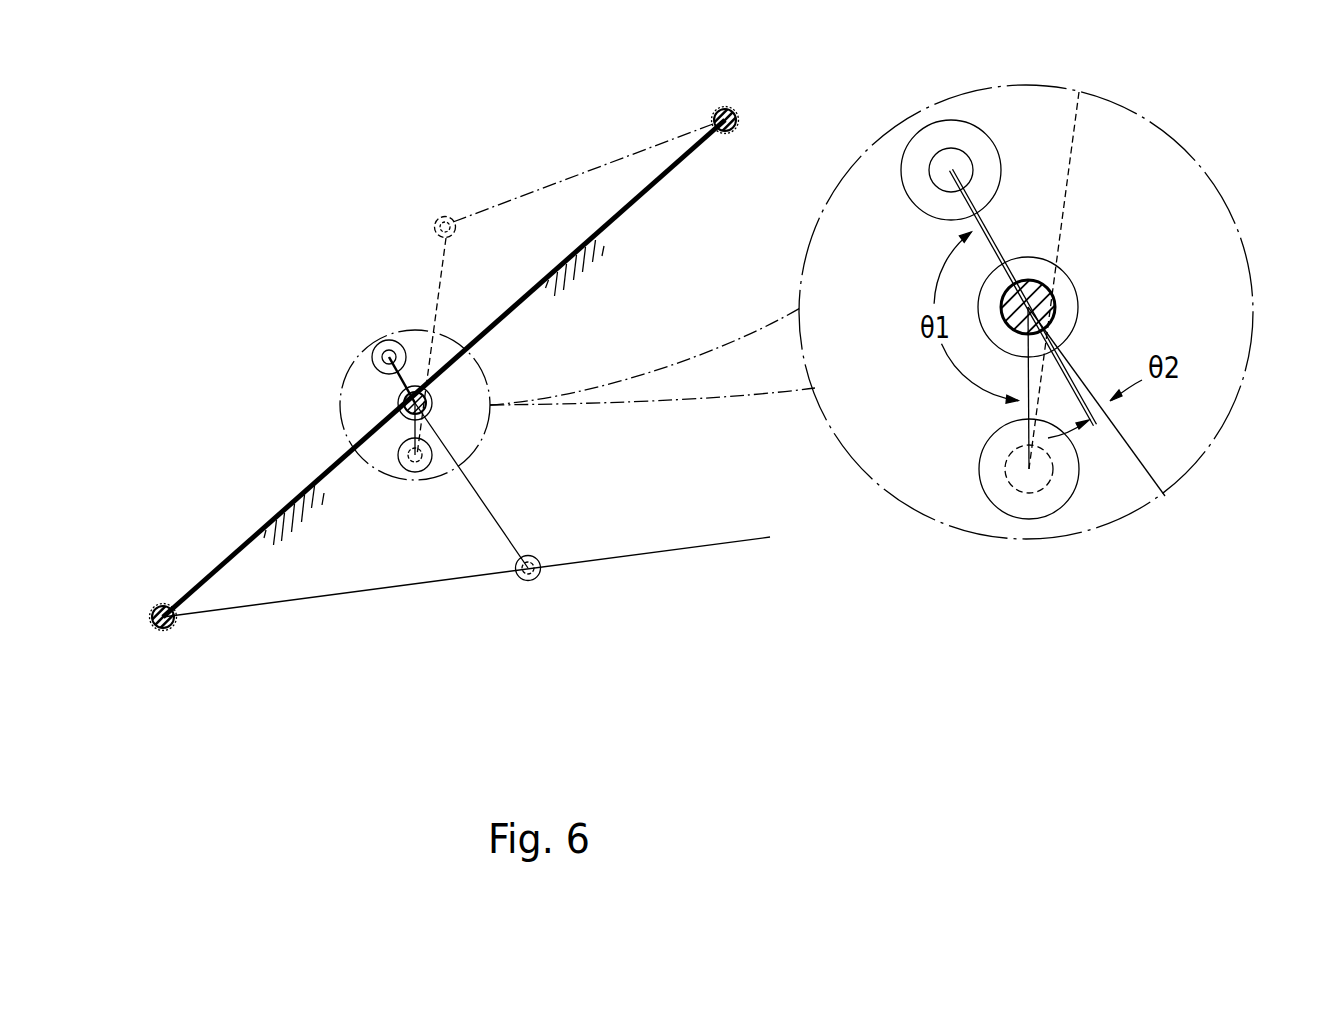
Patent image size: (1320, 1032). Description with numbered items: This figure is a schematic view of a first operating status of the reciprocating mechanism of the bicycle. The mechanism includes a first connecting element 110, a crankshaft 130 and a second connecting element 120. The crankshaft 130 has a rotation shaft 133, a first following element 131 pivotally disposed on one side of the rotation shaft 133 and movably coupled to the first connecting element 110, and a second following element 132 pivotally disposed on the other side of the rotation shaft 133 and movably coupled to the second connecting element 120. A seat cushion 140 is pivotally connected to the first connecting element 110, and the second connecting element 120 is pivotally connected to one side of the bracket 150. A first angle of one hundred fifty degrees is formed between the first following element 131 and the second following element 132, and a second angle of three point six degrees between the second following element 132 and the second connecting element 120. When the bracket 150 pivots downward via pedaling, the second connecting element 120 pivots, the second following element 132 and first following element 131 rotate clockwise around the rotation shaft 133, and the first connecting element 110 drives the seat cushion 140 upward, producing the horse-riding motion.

The first connecting element 110 is at (420, 336).
The second connecting element 120 is at (495, 512).
The crankshaft 130 is at (272, 353).
The first following element 131 is at (407, 438).
The second following element 132 is at (396, 379).
The rotation shaft 133 is at (398, 404).
The seat cushion 140 is at (560, 181).
The bracket 150 is at (663, 552).